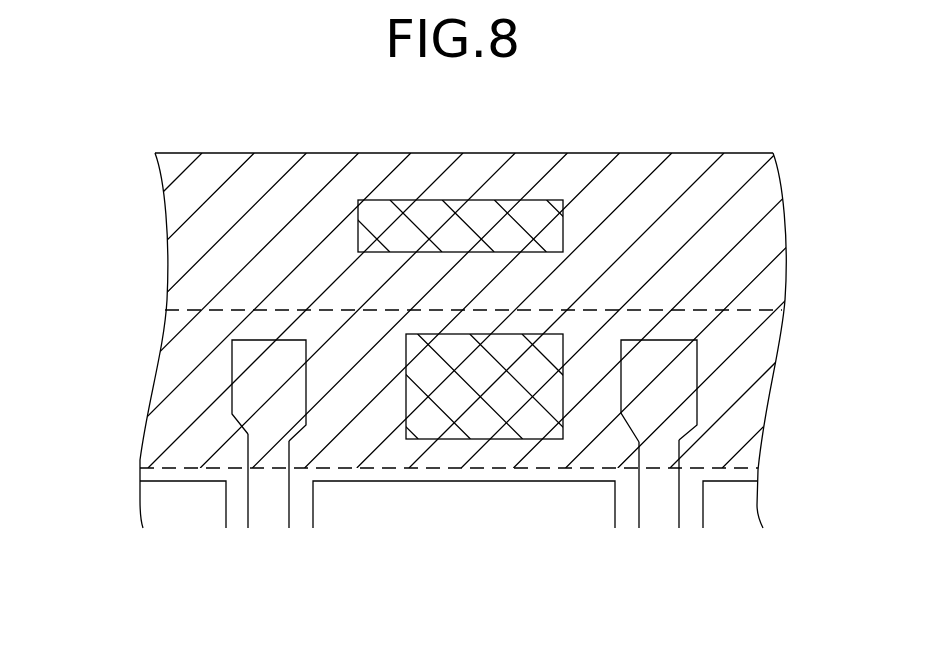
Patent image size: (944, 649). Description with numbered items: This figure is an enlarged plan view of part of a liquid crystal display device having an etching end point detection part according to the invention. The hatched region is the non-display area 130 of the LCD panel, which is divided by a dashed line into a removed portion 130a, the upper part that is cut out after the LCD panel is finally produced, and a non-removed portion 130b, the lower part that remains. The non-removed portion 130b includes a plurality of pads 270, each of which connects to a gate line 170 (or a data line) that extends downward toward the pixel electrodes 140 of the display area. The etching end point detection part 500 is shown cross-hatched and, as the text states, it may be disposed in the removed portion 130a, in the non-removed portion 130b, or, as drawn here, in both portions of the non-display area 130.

The non-display area 130 is at (792, 155).
The removed portion 130a is at (115, 162).
The non-removed portion 130b is at (115, 323).
The pixel electrode 140 is at (157, 513).
The gate line 170 is at (268, 510).
The pad 270 is at (240, 405).
The etching end point detection part 500 is at (453, 200).